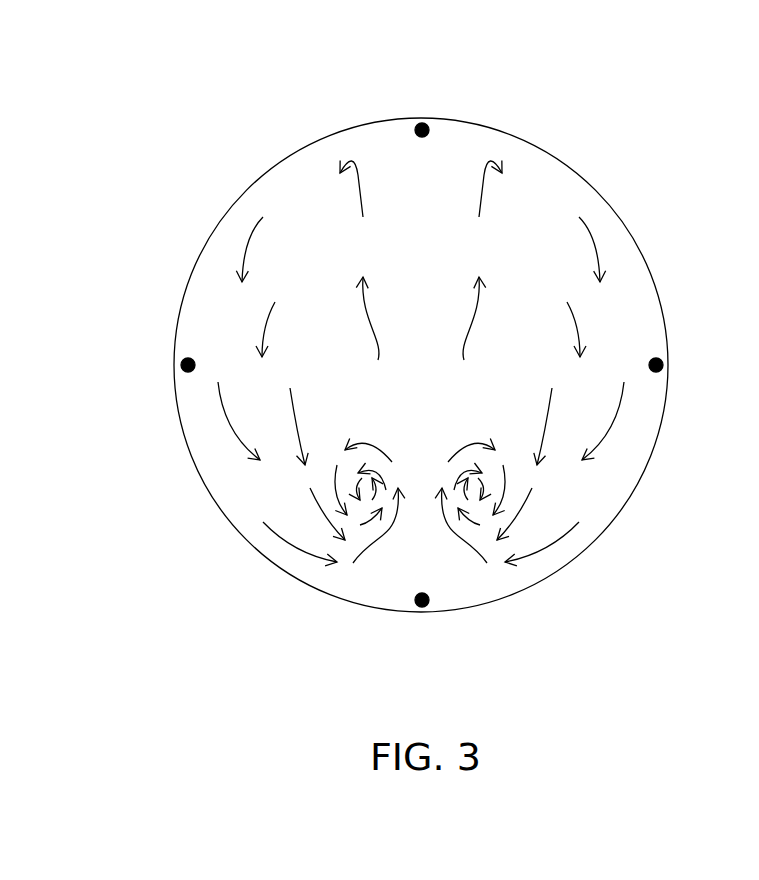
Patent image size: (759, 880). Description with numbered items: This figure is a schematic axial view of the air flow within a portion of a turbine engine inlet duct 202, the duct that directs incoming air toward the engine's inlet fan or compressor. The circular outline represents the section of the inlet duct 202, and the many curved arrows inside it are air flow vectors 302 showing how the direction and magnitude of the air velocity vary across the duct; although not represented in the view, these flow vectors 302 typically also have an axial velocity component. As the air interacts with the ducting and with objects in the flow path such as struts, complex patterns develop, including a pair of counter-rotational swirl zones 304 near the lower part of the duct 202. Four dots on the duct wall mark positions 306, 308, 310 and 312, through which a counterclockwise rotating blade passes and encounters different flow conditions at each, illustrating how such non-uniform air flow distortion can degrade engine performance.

The inlet duct 202 is at (600, 195).
The air flow vectors 302 is at (249, 235).
The counter-rotational swirl zones 304 is at (428, 545).
The blade position 306 is at (425, 124).
The blade position 308 is at (182, 366).
The blade position 310 is at (422, 606).
The blade position 312 is at (662, 364).